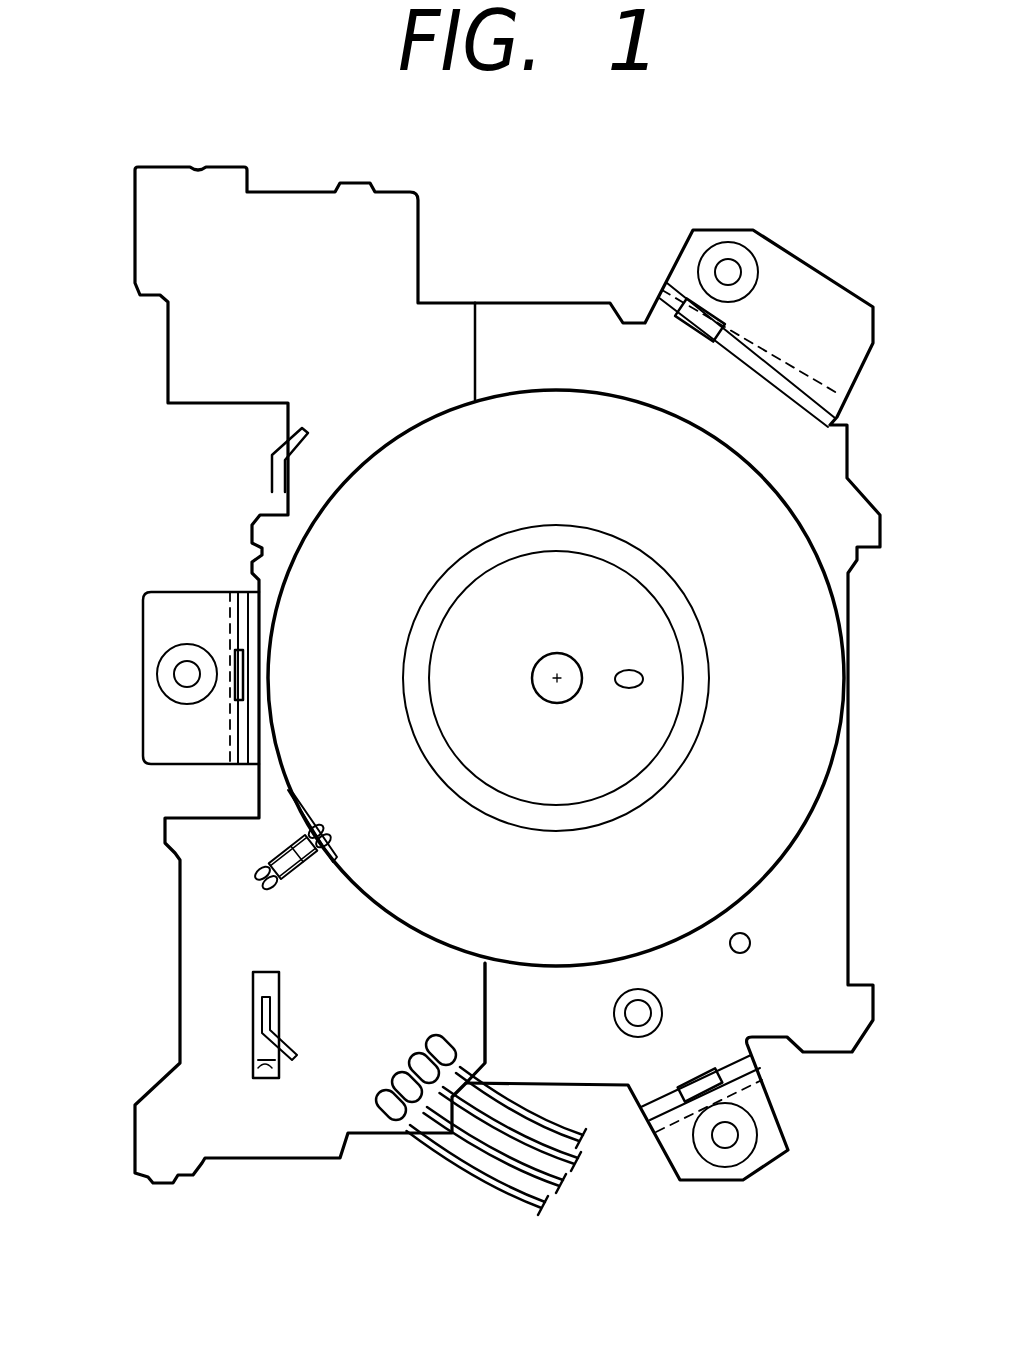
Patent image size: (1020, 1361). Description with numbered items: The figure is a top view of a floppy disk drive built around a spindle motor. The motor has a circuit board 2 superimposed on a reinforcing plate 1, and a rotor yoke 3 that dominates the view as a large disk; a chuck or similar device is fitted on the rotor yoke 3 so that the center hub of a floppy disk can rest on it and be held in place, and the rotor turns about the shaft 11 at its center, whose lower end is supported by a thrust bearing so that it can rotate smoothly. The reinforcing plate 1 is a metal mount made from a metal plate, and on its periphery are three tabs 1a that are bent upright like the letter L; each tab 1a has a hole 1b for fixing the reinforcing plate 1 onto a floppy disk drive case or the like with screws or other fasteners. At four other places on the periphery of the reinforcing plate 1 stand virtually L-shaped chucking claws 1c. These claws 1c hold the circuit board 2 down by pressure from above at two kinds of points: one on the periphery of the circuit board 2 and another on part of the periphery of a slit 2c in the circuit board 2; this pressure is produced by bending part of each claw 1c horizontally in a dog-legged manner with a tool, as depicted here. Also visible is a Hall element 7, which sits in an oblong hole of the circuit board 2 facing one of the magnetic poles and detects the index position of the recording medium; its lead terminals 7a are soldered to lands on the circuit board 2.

The reinforcing plate 1 is at (565, 330).
The tab 1a is at (820, 300).
The hole 1b is at (728, 268).
The chucking claw 1c is at (270, 465).
The circuit board 2 is at (337, 257).
The slit 2c is at (267, 1077).
The rotor yoke 3 is at (347, 583).
The Hall element 7 is at (283, 853).
The lead terminal 7a is at (243, 807).
The shaft 11 is at (569, 666).